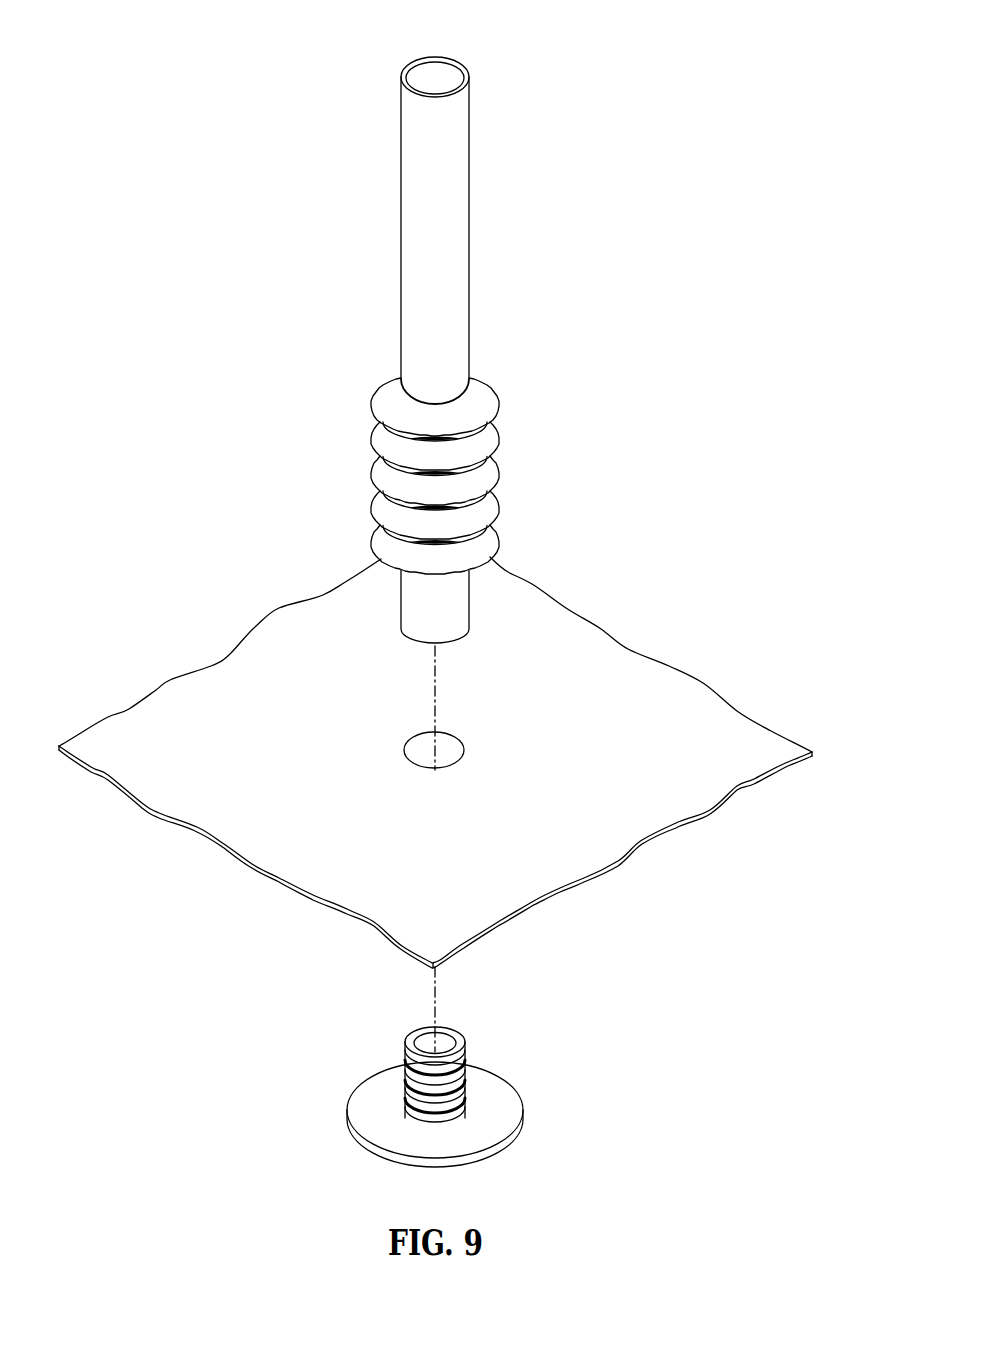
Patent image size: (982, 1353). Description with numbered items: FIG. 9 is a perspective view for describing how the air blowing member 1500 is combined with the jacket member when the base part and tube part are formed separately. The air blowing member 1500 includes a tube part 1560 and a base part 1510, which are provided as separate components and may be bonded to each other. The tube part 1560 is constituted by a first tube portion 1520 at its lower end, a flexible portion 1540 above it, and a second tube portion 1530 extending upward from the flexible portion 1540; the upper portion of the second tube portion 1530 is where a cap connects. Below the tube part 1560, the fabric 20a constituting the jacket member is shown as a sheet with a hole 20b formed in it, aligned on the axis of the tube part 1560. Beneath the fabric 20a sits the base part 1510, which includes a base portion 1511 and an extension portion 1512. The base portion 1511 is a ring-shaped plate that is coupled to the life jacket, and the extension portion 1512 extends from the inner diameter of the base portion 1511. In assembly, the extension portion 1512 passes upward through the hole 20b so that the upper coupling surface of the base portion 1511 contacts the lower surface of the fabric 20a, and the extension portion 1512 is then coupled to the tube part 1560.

The air blowing member 1500 is at (533, 36).
The second tube portion 1530 is at (462, 267).
The flexible portion 1540 is at (487, 468).
The first tube portion 1520 is at (461, 596).
The tube part 1560 is at (583, 257).
The base part 1510 is at (489, 1042).
The base portion 1511 is at (512, 1103).
The extension portion 1512 is at (408, 1037).
The fabric 20a is at (224, 666).
The hole 20b is at (426, 750).